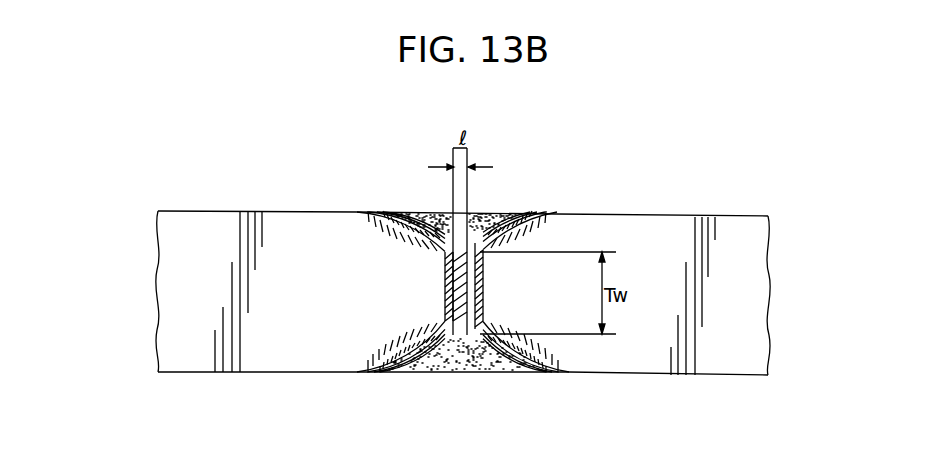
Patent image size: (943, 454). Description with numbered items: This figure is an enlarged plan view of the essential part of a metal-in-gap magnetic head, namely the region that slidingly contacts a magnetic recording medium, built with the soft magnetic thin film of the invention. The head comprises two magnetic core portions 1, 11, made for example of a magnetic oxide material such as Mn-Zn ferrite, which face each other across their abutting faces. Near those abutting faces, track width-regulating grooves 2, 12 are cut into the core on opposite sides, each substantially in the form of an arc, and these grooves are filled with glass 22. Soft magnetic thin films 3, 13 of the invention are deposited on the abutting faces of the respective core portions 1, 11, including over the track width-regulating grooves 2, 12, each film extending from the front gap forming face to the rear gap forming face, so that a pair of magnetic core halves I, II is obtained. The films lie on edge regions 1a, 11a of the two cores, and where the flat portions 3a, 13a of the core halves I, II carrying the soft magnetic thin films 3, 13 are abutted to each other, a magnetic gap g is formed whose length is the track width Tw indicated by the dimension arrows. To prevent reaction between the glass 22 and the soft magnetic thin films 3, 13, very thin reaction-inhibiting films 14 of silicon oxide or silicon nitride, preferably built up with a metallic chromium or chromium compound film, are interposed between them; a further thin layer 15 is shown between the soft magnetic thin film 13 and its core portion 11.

The magnetic core portion 1 is at (191, 221).
The magnetic core portion 11 is at (658, 222).
The track width-regulating groove 2 is at (380, 372).
The track width-regulating groove 12 is at (533, 372).
The soft magnetic thin film 3 is at (373, 212).
The soft magnetic thin film 13 is at (573, 215).
The reaction-inhibiting film 14 is at (388, 212).
The gap layer 15 is at (577, 217).
The glass 22 is at (437, 218).
The edge portion of first sheet 1a is at (445, 272).
The edge portion of second sheet 11a is at (483, 272).
The flat portion 3a is at (449, 303).
The flat portion 13a is at (478, 303).
The magnetic gap g is at (447, 372).
The magnetic core half I is at (157, 295).
The magnetic core half II is at (770, 312).